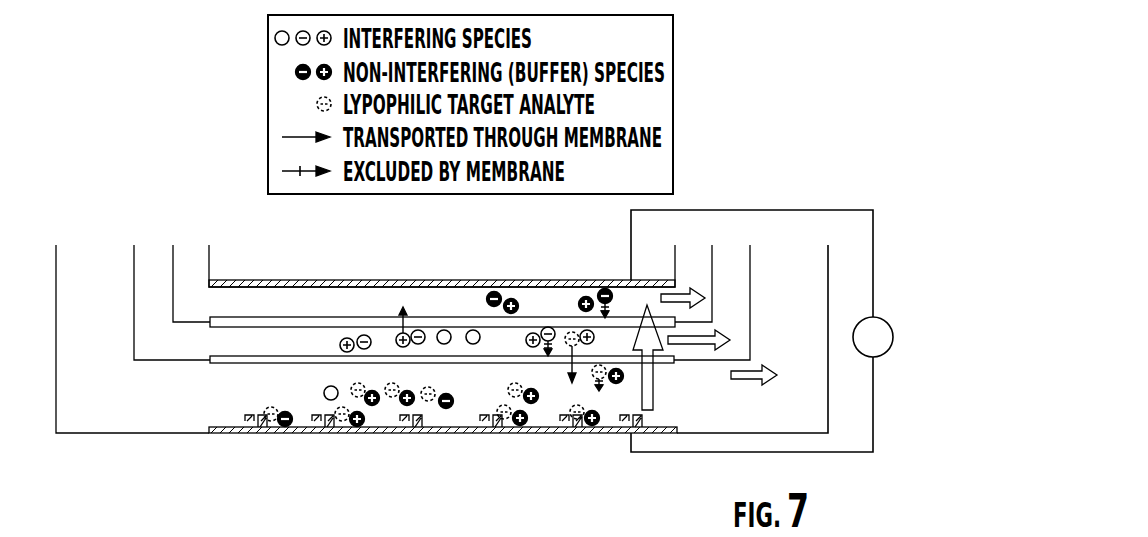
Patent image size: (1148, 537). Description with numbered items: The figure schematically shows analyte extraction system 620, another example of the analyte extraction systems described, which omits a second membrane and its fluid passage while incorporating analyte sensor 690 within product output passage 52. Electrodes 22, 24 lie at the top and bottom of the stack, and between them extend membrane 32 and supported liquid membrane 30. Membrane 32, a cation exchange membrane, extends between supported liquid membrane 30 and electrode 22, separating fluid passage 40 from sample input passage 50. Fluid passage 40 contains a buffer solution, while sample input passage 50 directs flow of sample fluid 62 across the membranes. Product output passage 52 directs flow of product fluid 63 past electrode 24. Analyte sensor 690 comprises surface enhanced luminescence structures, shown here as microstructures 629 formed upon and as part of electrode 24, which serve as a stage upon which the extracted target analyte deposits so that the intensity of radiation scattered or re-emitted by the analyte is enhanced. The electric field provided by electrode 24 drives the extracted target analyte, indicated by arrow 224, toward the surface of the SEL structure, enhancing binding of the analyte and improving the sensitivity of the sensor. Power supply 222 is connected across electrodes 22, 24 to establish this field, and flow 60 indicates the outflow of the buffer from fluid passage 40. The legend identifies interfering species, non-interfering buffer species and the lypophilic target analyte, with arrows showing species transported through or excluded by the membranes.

The analyte extraction system 620 is at (180, 104).
The product output passage 52 is at (57, 265).
The sample input passage 50 is at (135, 265).
The fluid passage 40 is at (174, 265).
The electrode 22 is at (530, 279).
The membrane 32 is at (300, 316).
The supported liquid membrane 30 is at (224, 364).
The electrode 24 is at (522, 434).
The electrode microstructures 629 is at (482, 415).
The analyte sensor 690 is at (193, 407).
The first outlet flow 60 is at (692, 291).
The sample fluid 62 is at (715, 332).
The product fluid 63 is at (766, 367).
The analyte transport direction 224 is at (651, 380).
The power supply 222 is at (887, 323).